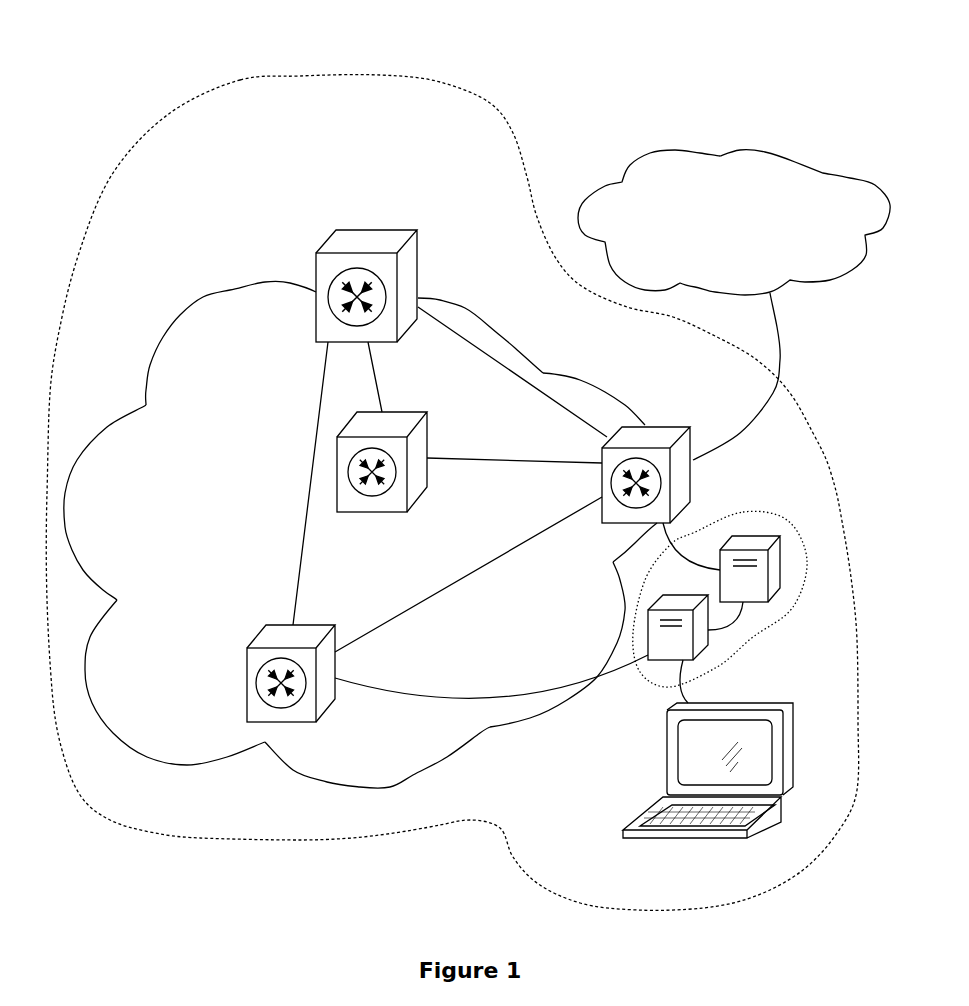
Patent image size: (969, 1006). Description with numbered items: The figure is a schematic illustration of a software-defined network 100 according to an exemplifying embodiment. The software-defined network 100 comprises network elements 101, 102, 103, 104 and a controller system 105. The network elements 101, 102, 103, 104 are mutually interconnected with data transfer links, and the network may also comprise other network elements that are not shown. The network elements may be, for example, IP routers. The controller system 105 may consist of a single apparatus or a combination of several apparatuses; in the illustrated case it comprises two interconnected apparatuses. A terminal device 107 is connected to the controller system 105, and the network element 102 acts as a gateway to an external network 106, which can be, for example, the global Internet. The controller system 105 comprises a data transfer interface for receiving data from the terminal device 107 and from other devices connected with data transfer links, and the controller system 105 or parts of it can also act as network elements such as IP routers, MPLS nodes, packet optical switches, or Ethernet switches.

The software-defined network 100 is at (236, 80).
The network element 101 is at (246, 713).
The network element 102 is at (662, 426).
The network element 103 is at (400, 410).
The network element 104 is at (318, 246).
The controller system 105 is at (757, 512).
The external network 106 is at (734, 222).
The terminal device 107 is at (778, 703).